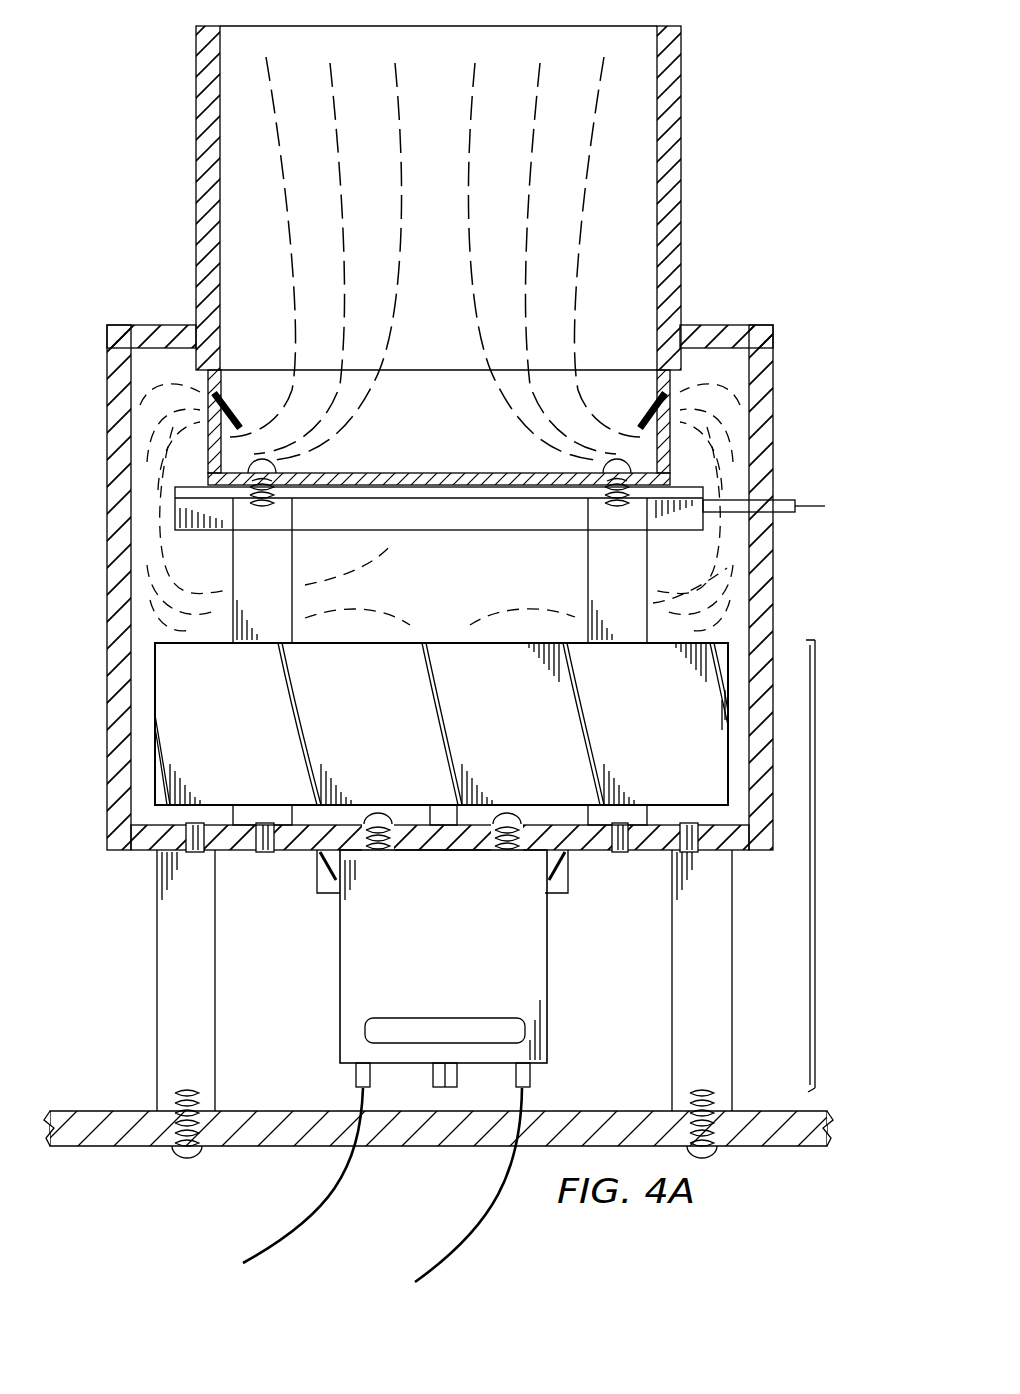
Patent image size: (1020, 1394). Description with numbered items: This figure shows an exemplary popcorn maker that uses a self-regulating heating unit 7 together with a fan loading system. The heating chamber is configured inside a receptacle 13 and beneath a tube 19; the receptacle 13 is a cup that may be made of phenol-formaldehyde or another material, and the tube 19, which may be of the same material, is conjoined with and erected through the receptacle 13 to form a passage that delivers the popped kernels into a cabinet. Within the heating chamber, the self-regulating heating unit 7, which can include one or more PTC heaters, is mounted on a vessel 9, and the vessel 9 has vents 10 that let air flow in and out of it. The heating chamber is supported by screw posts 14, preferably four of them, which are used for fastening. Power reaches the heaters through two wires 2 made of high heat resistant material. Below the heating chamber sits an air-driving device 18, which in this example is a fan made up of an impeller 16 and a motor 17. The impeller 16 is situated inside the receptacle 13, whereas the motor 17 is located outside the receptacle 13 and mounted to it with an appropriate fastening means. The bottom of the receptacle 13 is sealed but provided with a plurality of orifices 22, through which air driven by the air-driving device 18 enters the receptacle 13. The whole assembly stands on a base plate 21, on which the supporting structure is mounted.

The wires 2 is at (798, 506).
The self-regulating heating unit 7 is at (461, 531).
The vessel 9 is at (432, 473).
The vents 10 is at (672, 420).
The receptacle 13 is at (108, 725).
The screw posts 14 is at (588, 578).
The impeller 16 is at (360, 738).
The motor 17 is at (428, 955).
The air-driving device 18 is at (812, 860).
The tube 19 is at (681, 78).
The base plate 21 is at (92, 1111).
The orifices 22 is at (585, 852).